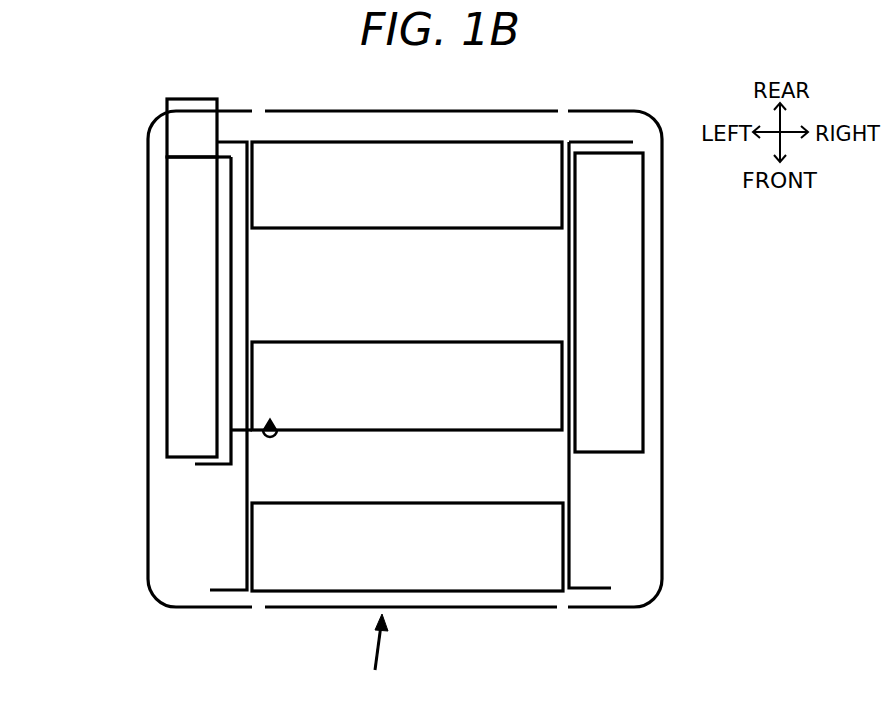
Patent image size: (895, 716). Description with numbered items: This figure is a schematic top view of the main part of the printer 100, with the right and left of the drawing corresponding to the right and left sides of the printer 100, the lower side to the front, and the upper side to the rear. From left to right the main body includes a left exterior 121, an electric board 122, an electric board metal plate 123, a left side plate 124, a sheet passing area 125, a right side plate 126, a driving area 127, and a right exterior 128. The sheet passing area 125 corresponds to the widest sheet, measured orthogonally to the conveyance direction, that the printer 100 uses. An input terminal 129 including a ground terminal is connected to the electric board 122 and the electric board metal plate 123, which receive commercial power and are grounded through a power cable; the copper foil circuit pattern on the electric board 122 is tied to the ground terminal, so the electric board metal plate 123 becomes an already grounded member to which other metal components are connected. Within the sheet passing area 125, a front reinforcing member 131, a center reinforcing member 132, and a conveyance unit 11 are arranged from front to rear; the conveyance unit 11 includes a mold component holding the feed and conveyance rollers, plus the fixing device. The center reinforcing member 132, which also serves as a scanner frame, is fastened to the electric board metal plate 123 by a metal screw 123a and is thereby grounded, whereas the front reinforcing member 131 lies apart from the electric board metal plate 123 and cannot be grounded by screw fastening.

The printer 100 is at (373, 385).
The conveyance unit 11 is at (475, 212).
The left exterior 121 is at (148, 567).
The electric board 122 is at (183, 405).
The electric board metal plate 123 is at (207, 466).
The metal screw 123a is at (271, 437).
The left side plate 124 is at (247, 553).
The sheet passing area 125 is at (379, 657).
The right side plate 126 is at (570, 545).
The driving area 127 is at (618, 195).
The right exterior 128 is at (658, 178).
The input terminal 129 is at (205, 128).
The front reinforcing member 131 is at (468, 548).
The center reinforcing member 132 is at (352, 385).